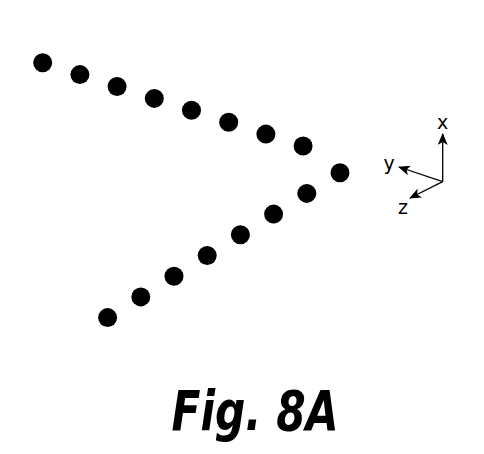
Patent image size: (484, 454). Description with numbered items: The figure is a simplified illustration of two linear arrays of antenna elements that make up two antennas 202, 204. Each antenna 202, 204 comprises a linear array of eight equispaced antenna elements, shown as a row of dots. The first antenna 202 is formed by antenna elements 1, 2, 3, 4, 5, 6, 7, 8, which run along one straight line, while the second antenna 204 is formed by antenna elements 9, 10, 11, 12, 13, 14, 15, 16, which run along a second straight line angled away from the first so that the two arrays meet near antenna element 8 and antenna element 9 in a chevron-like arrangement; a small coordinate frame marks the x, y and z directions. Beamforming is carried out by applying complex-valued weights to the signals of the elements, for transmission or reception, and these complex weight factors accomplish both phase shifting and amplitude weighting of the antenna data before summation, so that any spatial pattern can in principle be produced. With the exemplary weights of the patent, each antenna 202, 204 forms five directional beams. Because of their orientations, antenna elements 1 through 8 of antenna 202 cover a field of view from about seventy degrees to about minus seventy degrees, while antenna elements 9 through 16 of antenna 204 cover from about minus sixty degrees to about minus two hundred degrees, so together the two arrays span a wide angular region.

The antenna 202 is at (243, 72).
The antenna 204 is at (276, 279).
The antenna element 1 is at (46, 48).
The antenna element 2 is at (83, 60).
The antenna element 3 is at (121, 72).
The antenna element 4 is at (158, 84).
The antenna element 5 is at (195, 96).
The antenna element 6 is at (232, 108).
The antenna element 7 is at (269, 120).
The antenna element 8 is at (307, 132).
The antenna element 9 is at (345, 188).
The antenna element 10 is at (315, 209).
The antenna element 11 is at (282, 230).
The antenna element 12 is at (249, 250).
The antenna element 13 is at (216, 271).
The antenna element 14 is at (183, 292).
The antenna element 15 is at (149, 312).
The antenna element 16 is at (116, 333).